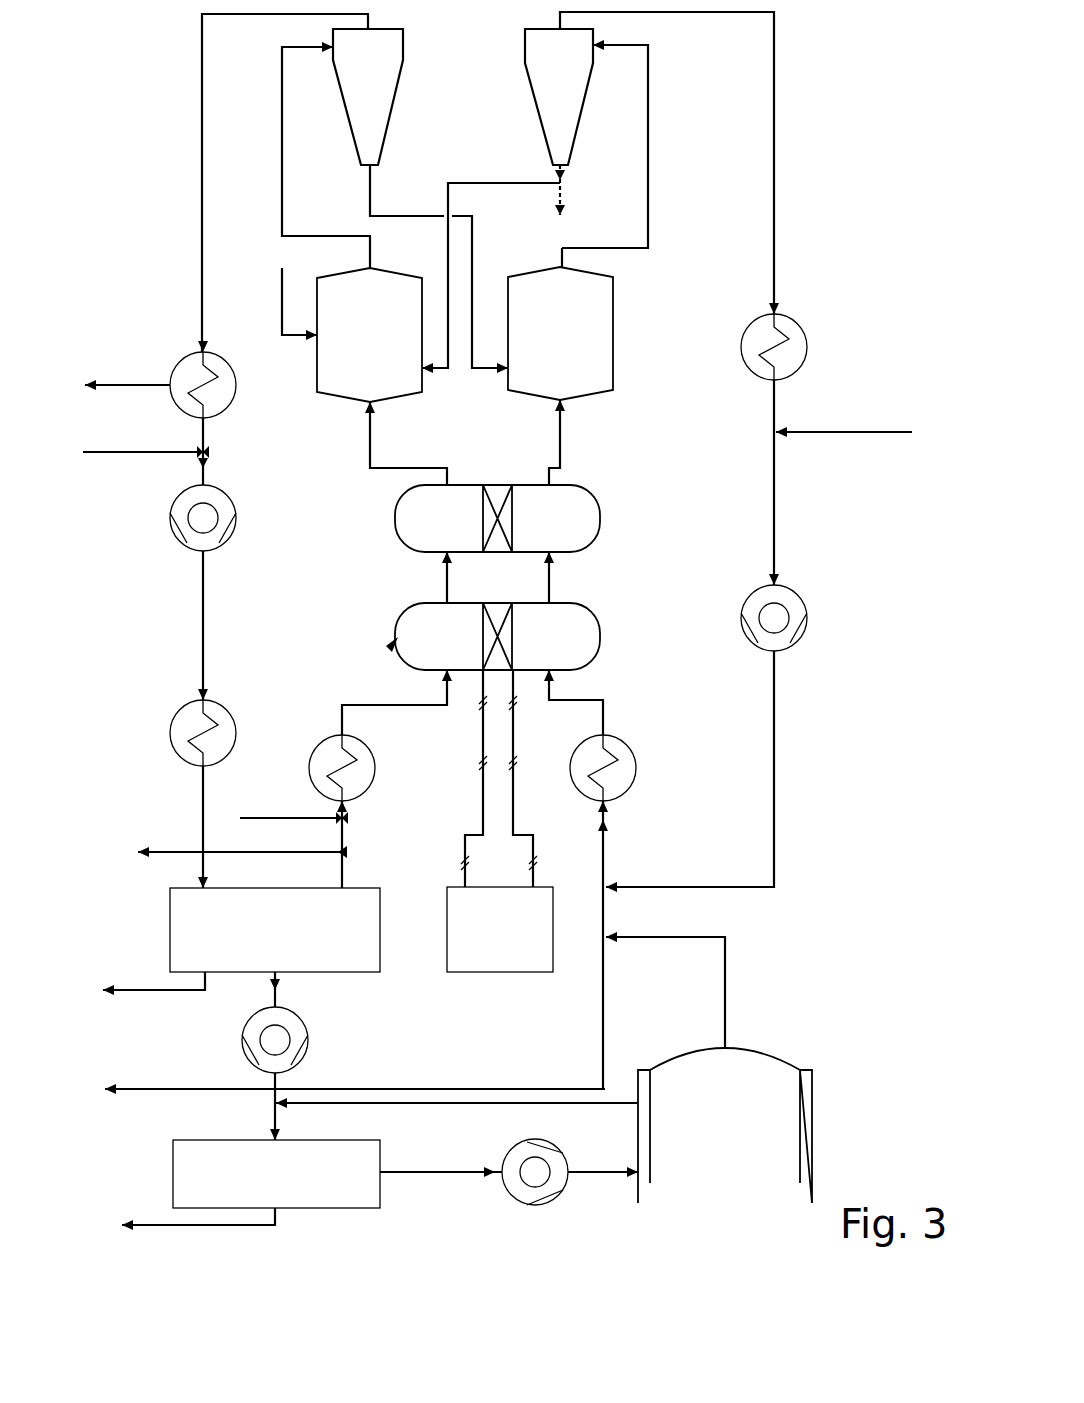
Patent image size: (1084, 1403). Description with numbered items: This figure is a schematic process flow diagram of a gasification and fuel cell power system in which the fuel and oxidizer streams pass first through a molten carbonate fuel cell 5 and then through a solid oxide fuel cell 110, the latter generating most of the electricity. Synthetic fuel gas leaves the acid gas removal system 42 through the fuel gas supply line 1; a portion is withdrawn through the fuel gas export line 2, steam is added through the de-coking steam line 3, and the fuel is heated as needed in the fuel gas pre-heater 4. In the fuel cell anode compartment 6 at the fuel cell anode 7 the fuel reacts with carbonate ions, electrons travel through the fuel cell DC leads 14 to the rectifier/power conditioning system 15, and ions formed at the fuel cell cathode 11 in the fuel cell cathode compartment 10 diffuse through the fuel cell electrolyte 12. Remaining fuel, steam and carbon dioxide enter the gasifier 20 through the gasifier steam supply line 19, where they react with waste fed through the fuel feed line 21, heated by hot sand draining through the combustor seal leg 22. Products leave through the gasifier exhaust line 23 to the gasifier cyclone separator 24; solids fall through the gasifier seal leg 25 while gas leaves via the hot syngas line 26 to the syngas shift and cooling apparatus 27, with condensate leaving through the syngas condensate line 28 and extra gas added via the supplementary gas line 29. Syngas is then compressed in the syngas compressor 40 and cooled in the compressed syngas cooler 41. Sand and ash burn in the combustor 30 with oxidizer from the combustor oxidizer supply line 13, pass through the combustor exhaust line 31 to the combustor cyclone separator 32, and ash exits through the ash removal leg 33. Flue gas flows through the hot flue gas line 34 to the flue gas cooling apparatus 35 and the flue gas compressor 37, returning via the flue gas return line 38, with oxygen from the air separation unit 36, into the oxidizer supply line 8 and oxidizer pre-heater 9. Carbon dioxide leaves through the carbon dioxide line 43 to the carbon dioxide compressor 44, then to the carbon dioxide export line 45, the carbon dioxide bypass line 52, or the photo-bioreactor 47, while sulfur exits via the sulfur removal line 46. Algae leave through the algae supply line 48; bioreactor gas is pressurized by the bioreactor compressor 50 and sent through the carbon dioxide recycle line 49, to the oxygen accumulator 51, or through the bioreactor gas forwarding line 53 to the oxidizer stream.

The fuel gas supply line 1 is at (350, 818).
The fuel gas export line 2 is at (185, 850).
The de-coking steam line 3 is at (305, 817).
The fuel gas pre-heater 4 is at (313, 740).
The molten carbonate fuel cell 5 is at (390, 644).
The fuel cell anode compartment 6 is at (412, 620).
The fuel cell anode 7 is at (480, 617).
The oxidizer supply line 8 is at (605, 852).
The oxidizer pre-heater 9 is at (640, 768).
The fuel cell cathode compartment 10 is at (600, 636).
The fuel cell cathode 11 is at (515, 614).
The fuel cell electrolyte 12 is at (505, 600).
The combustor oxidizer supply line 13 is at (563, 427).
The fuel cell DC leads 14 is at (510, 780).
The rectifier/power conditioning system 15 is at (500, 972).
The gasifier steam supply line 19 is at (365, 422).
The gasifier 20 is at (317, 370).
The fuel feed line 21 is at (280, 292).
The combustor seal leg 22 is at (480, 178).
The gasifier exhaust line 23 is at (282, 200).
The gasifier cyclone separator 24 is at (405, 45).
The gasifier seal leg 25 is at (370, 197).
The hot syngas line 26 is at (198, 110).
The syngas shift and cooling apparatus 27 is at (178, 357).
The syngas condensate line 28 is at (142, 383).
The supplementary gas line 29 is at (135, 457).
The combustor 30 is at (615, 365).
The combustor exhaust line 31 is at (656, 243).
The combustor cyclone separator 32 is at (562, 198).
The ash removal leg 33 is at (648, 228).
The hot flue gas line 34 is at (778, 68).
The flue gas cooling apparatus 35 is at (808, 345).
The air separation unit 36 is at (875, 430).
The flue gas compressor 37 is at (815, 615).
The flue gas return line 38 is at (778, 812).
The syngas compressor 40 is at (175, 527).
The compressed syngas cooler 41 is at (165, 730).
The acid gas removal system 42 is at (168, 930).
The carbon dioxide line 43 is at (280, 985).
The carbon dioxide compressor 44 is at (312, 1040).
The carbon dioxide export line 45 is at (222, 1087).
The sulfur removal line 46 is at (148, 990).
The photo-bioreactor 47 is at (170, 1172).
The algae supply line 48 is at (160, 1212).
The carbon dioxide recycle line 49 is at (432, 1107).
The bioreactor compressor 50 is at (565, 1192).
The oxygen accumulator 51 is at (815, 1098).
The carbon dioxide bypass line 52 is at (605, 1007).
The bioreactor gas forwarding line 53 is at (725, 975).
The solid oxide fuel cell 110 is at (390, 519).